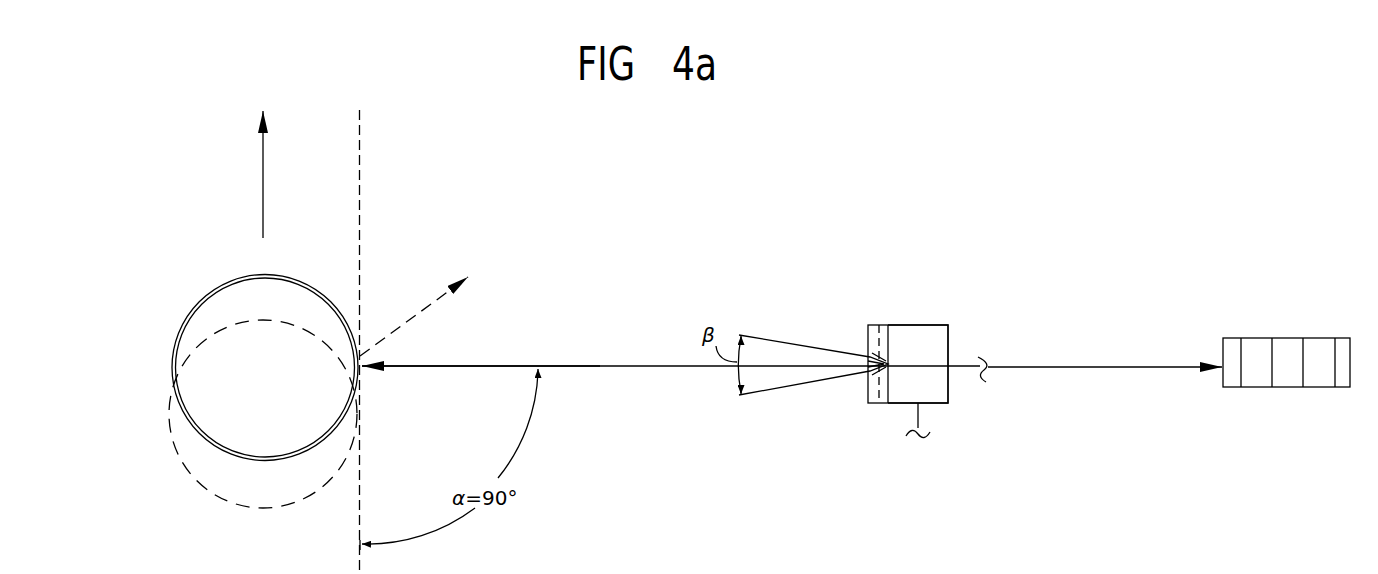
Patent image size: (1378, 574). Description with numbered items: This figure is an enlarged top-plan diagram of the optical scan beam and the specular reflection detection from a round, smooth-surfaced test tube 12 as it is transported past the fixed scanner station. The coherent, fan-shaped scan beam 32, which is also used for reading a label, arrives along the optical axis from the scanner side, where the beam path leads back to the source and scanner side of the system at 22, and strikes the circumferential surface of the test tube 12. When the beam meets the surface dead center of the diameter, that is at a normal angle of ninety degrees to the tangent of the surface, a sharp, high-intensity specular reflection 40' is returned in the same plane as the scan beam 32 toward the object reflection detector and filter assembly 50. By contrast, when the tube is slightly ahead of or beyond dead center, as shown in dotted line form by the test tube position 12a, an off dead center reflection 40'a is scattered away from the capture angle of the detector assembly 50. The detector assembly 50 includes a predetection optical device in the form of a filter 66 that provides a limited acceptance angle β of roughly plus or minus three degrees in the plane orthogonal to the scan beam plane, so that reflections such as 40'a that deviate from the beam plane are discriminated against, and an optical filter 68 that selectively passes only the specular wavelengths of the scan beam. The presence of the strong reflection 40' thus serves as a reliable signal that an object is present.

The test tube 12 is at (191, 303).
The test tube position 12a is at (190, 478).
The light source / emitter unit 22 is at (1272, 335).
The scan beam 32 is at (580, 371).
The reflection 40' is at (481, 342).
The off dead center reflection 40'a is at (420, 299).
The object reflection detector and filter assembly 50 is at (885, 334).
The filter 66 is at (885, 322).
The optical filter 68 is at (872, 322).